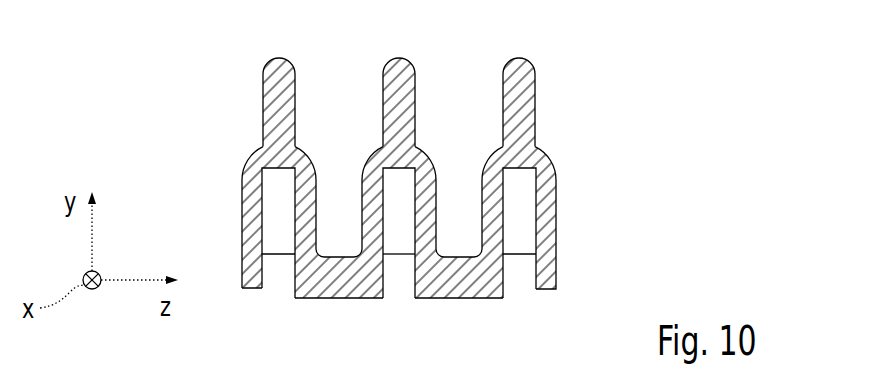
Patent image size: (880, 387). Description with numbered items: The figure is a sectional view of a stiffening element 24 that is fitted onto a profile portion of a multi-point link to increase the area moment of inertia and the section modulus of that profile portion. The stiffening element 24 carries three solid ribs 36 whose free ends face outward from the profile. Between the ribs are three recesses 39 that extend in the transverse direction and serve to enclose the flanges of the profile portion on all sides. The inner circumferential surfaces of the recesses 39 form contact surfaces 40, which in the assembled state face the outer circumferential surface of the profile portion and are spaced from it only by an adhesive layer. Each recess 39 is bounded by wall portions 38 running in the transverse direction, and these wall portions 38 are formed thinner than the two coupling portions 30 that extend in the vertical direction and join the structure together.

The stiffening element 24 is at (618, 122).
The solid ribs 36 is at (295, 93).
The wall portions 38 is at (253, 221).
The coupling portions 30 is at (335, 267).
The recesses 39 is at (399, 241).
The contact surfaces 40 is at (294, 278).